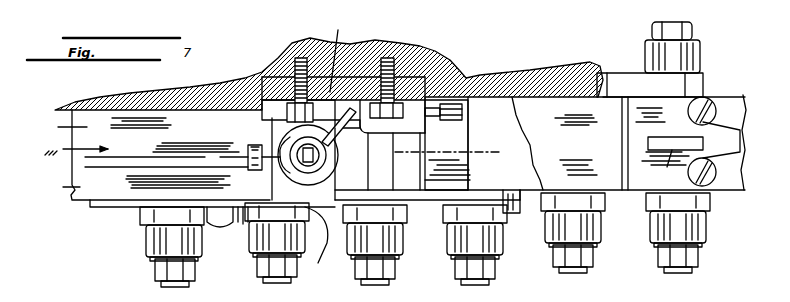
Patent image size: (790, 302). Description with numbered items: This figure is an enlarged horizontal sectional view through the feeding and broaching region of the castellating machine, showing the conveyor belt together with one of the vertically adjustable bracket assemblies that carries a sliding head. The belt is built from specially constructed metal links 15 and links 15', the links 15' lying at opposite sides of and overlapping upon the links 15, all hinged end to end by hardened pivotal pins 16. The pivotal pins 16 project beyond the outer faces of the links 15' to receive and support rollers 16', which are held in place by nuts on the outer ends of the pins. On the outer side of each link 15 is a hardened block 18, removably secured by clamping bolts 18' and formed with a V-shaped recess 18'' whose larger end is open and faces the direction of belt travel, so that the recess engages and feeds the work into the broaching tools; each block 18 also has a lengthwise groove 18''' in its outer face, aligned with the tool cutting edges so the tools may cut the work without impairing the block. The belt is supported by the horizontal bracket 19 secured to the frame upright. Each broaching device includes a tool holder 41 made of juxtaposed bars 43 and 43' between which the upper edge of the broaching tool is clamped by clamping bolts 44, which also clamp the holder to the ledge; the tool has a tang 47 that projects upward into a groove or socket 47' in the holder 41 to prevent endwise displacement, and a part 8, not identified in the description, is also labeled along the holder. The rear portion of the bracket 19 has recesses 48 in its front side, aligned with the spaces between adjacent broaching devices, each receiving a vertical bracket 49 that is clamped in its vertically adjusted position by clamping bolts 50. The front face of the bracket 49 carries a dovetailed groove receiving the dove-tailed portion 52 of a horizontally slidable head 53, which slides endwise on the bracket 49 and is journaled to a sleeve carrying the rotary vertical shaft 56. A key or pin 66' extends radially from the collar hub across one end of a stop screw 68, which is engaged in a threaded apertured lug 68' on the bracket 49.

The bore 8 is at (294, 153).
The link 15 is at (650, 80).
The link 15' is at (405, 217).
The pivotal pin 16 is at (426, 157).
The roller 16' is at (439, 150).
The block 18 is at (616, 143).
The clamping bolt 18' is at (712, 146).
The V-shaped recess 18'' is at (721, 140).
The lengthwise groove 18''' is at (666, 167).
The horizontal bracket 19 is at (449, 63).
The tool holder 41 is at (115, 155).
The bar 43 is at (296, 143).
The bar 43' is at (301, 180).
The clamping bolt 44 is at (223, 210).
The tang 47 is at (246, 148).
The groove or socket 47' is at (228, 138).
The recess 48 is at (275, 78).
The vertical bracket 49 is at (350, 77).
The clamping bolt 50 is at (281, 78).
The dove-tailed portion 52 is at (363, 145).
The horizontally slidable head 53 is at (336, 172).
The rotary vertical shaft 56 is at (300, 148).
The key or pin 66' is at (342, 53).
The stop screw 68 is at (529, 77).
The threaded apertured lug 68' is at (445, 145).